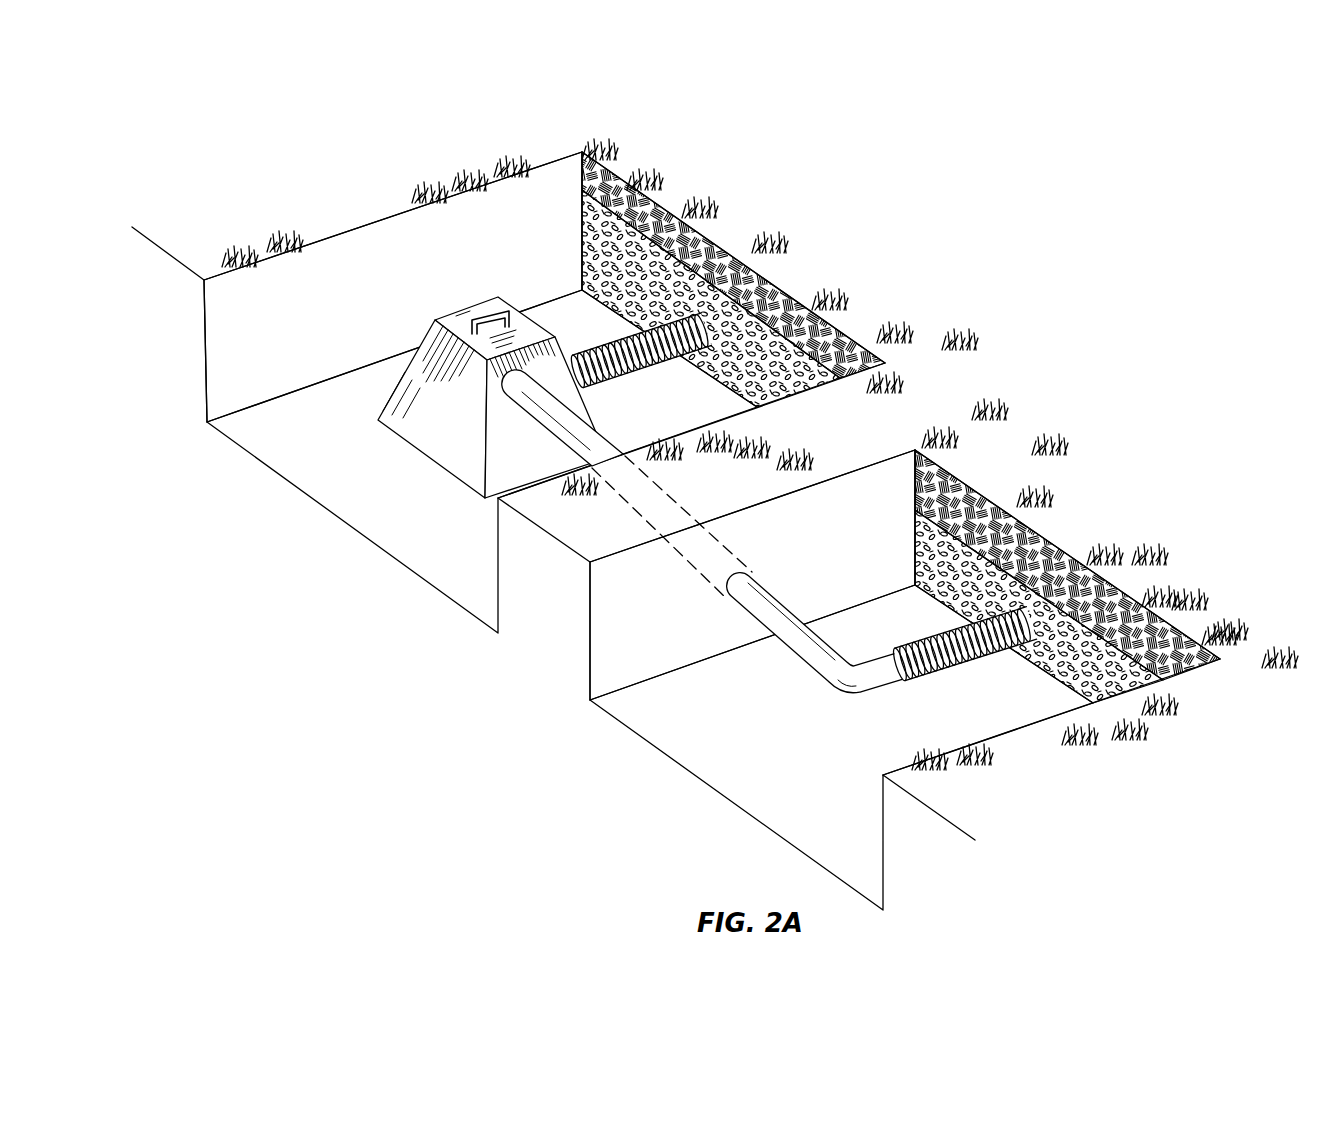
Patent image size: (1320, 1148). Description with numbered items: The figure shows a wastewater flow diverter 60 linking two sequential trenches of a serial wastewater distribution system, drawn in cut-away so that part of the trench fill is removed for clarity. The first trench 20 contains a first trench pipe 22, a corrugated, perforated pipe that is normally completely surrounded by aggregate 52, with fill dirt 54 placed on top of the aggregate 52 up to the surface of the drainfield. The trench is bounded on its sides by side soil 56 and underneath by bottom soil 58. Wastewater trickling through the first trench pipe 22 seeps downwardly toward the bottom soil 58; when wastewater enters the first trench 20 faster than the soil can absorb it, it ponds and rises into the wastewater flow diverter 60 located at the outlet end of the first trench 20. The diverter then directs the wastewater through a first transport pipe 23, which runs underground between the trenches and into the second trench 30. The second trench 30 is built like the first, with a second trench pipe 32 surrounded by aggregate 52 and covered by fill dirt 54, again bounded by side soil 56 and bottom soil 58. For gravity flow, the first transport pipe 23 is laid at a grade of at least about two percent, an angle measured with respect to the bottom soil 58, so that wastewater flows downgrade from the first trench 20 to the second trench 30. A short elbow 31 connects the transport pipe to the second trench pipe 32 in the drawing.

The first trench 20 is at (276, 546).
The second trench 30 is at (687, 812).
The first trench pipe 22 is at (603, 347).
The first transport pipe 23 is at (547, 467).
The elbow 31 is at (858, 683).
The second trench pipe 32 is at (980, 657).
The aggregate 52 is at (600, 215).
The fill dirt 54 is at (590, 190).
The side soil 56 is at (235, 350).
The bottom soil 58 is at (323, 468).
The wastewater flow diverter 60 is at (453, 320).